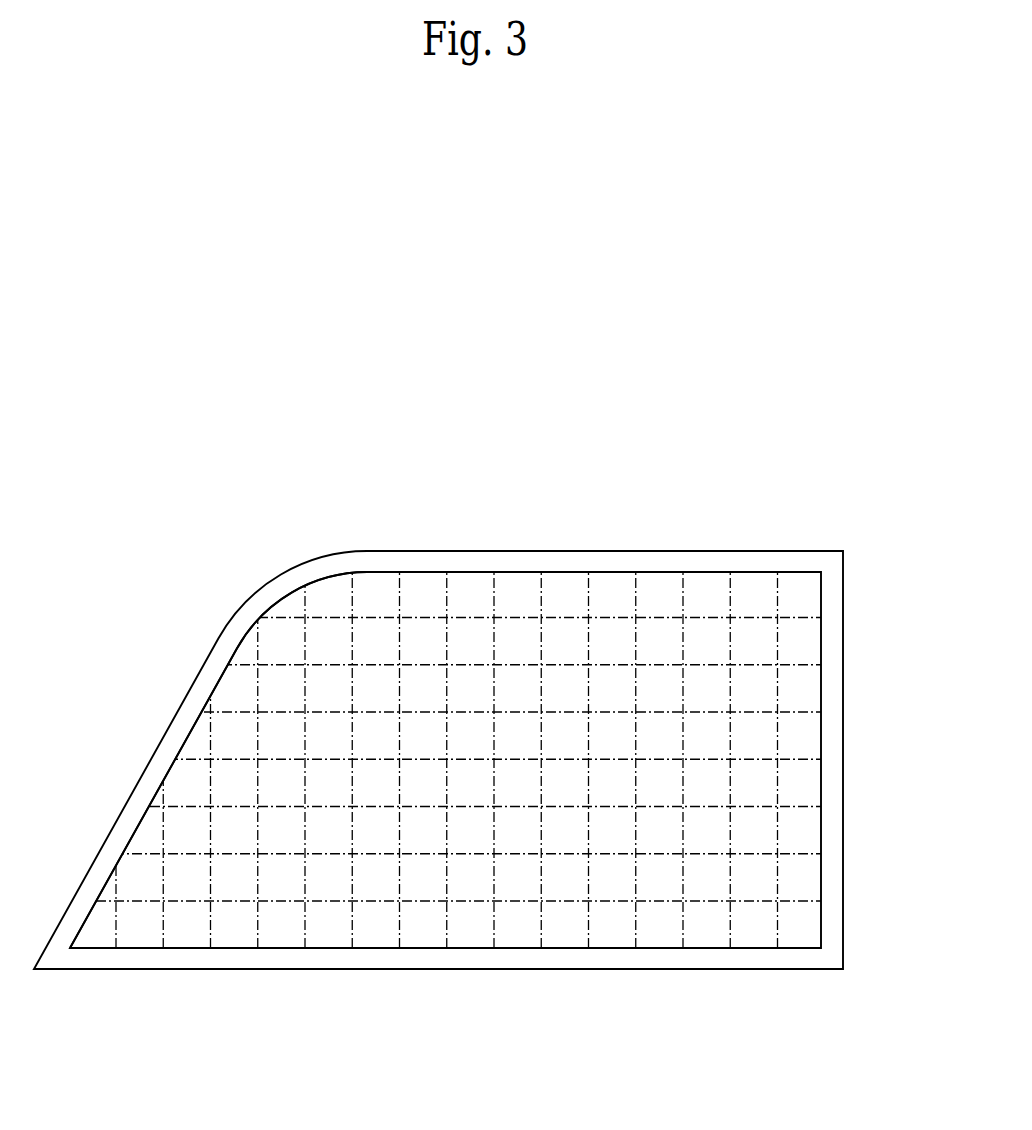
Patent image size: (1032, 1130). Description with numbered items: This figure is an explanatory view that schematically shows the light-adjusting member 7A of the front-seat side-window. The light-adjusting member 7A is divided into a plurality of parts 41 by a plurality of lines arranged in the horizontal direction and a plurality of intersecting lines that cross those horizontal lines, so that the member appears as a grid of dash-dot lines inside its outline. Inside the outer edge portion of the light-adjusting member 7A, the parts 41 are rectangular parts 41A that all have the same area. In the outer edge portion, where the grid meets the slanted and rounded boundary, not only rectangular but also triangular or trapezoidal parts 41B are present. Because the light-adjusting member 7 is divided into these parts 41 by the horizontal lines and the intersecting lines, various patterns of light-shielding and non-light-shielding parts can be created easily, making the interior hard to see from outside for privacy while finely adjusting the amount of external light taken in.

The light-adjusting member 7 is at (438, 722).
The light-adjusting member 7A is at (603, 563).
The parts 41 is at (475, 831).
The rectangular parts 41A is at (486, 831).
The triangular or trapezoidal parts 41B is at (248, 653).